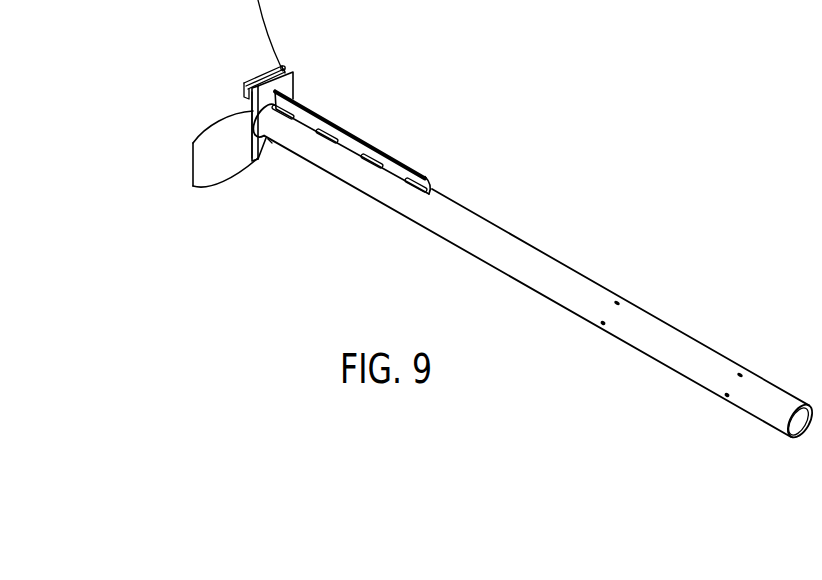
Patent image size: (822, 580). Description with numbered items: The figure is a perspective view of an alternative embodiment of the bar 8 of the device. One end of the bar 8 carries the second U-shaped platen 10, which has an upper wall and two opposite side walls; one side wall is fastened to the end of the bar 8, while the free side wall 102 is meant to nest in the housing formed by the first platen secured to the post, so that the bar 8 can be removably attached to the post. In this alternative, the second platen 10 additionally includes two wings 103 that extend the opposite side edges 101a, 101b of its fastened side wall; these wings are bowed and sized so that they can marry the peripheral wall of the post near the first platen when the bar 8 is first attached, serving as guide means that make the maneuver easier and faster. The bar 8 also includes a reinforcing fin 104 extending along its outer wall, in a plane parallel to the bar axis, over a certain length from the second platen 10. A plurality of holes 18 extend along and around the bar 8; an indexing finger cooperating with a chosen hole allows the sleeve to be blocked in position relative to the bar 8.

The bar 8 is at (556, 260).
The second U-shaped platen 10 is at (295, 83).
The holes 18 is at (617, 306).
The side edge 101a is at (254, 110).
The side edge 101b is at (297, 90).
The free side wall 102 is at (246, 96).
The wings 103 is at (217, 180).
The reinforcing fin 104 is at (419, 173).